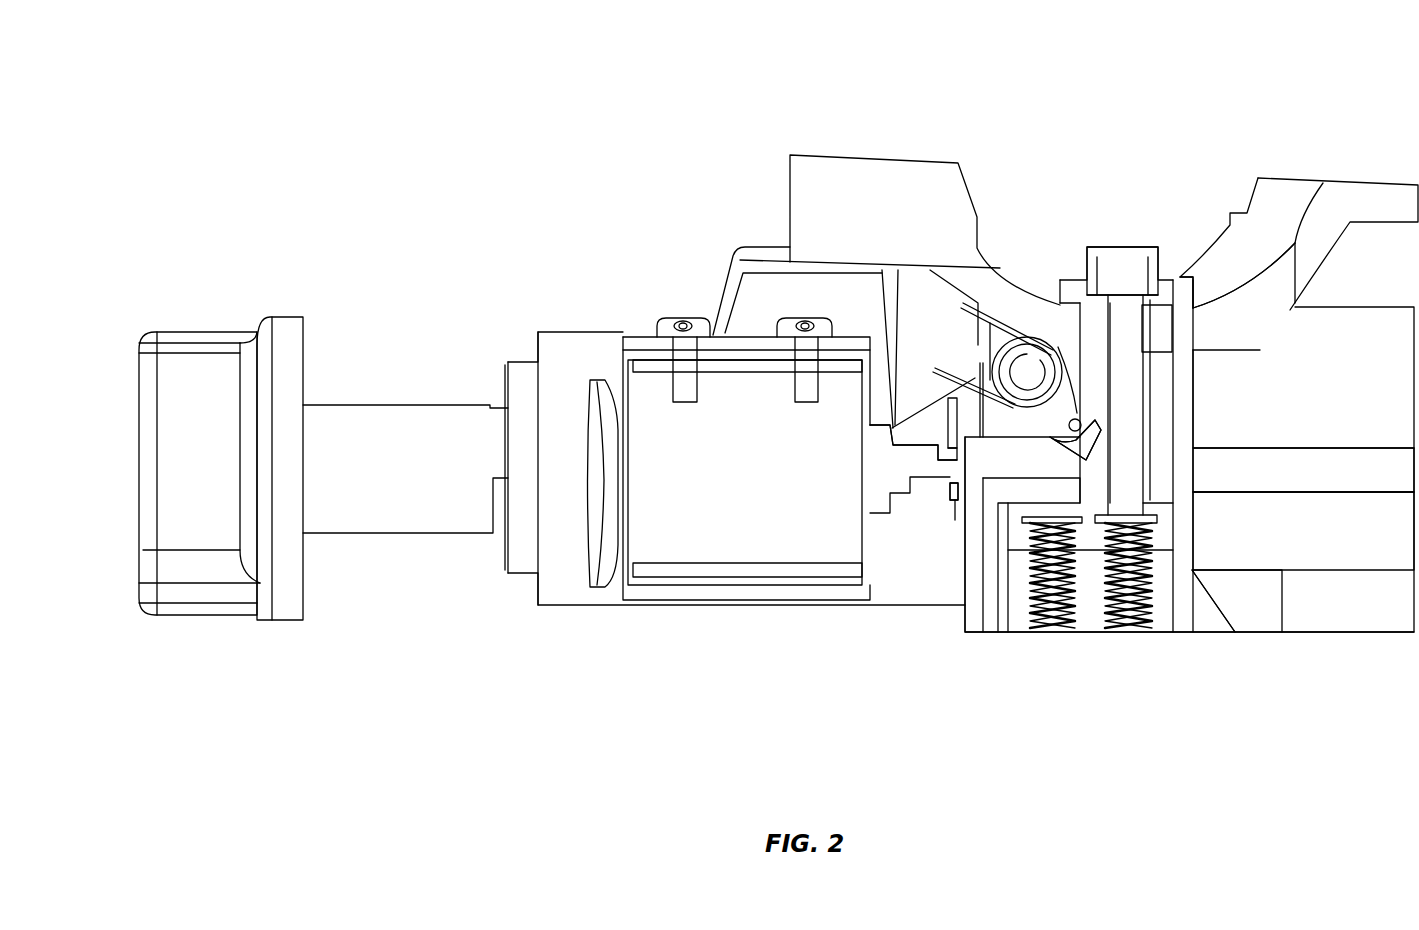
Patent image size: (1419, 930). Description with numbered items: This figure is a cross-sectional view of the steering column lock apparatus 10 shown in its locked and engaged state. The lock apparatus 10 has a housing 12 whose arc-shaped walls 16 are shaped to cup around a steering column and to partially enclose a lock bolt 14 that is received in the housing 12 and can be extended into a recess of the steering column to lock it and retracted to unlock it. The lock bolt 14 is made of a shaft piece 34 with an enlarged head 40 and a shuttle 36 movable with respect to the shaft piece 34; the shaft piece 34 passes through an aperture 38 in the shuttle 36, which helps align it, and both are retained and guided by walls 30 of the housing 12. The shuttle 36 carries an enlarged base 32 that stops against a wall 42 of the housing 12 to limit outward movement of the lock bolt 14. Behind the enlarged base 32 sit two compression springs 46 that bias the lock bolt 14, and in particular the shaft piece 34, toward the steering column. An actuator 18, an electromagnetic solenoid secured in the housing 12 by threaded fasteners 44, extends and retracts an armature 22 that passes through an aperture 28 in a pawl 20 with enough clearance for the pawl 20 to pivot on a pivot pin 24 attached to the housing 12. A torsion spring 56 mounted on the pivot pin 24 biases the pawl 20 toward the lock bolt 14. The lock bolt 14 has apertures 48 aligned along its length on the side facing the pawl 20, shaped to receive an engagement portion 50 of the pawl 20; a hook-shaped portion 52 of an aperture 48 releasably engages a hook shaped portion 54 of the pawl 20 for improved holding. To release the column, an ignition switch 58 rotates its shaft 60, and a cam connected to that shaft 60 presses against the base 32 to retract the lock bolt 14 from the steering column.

The lock apparatus 10 is at (462, 100).
The housing 12 is at (1195, 395).
The lock bolt 14 is at (1165, 438).
The walls 16 is at (978, 240).
The actuator 18 is at (767, 458).
The pawl 20 is at (950, 392).
The armature 22 is at (900, 460).
The pivot pin 24 is at (1050, 352).
The aperture 28 is at (950, 492).
The walls 30 is at (1175, 468).
The enlarged base 32 is at (1172, 548).
The shaft piece 34 is at (1140, 338).
The shuttle 36 is at (1195, 368).
The aperture 38 is at (1150, 505).
The head 40 is at (1142, 248).
The wall 42 is at (1013, 490).
The threaded fasteners 44 is at (792, 322).
The compression springs 46 is at (1110, 620).
The apertures 48 is at (1120, 400).
The engagement portion 50 is at (1033, 447).
The hook-shaped portion 52 is at (1069, 425).
The hook shaped portion 54 is at (1060, 445).
The torsion spring 56 is at (990, 345).
The ignition switch 58 is at (303, 625).
The shaft 60 is at (395, 528).